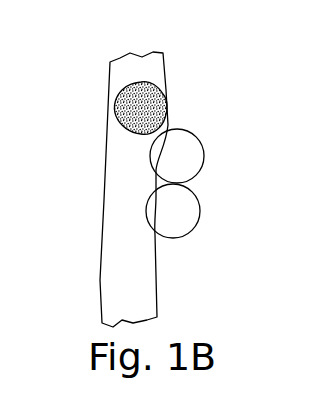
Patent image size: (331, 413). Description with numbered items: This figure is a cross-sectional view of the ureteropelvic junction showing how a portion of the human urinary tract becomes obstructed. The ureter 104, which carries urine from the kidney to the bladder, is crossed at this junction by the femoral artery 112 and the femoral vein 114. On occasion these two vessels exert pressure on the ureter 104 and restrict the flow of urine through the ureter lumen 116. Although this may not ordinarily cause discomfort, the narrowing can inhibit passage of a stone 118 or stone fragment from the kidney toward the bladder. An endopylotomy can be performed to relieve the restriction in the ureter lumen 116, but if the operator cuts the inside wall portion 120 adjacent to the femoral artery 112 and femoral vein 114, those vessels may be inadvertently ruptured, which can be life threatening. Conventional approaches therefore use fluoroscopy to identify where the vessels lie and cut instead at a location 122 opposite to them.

The ureter 104 is at (113, 260).
The femoral artery 112 is at (188, 207).
The femoral vein 114 is at (187, 143).
The ureter lumen 116 is at (137, 77).
The stone 118 is at (158, 93).
The inside wall portion 120 is at (142, 212).
The cutting location 122 is at (116, 169).